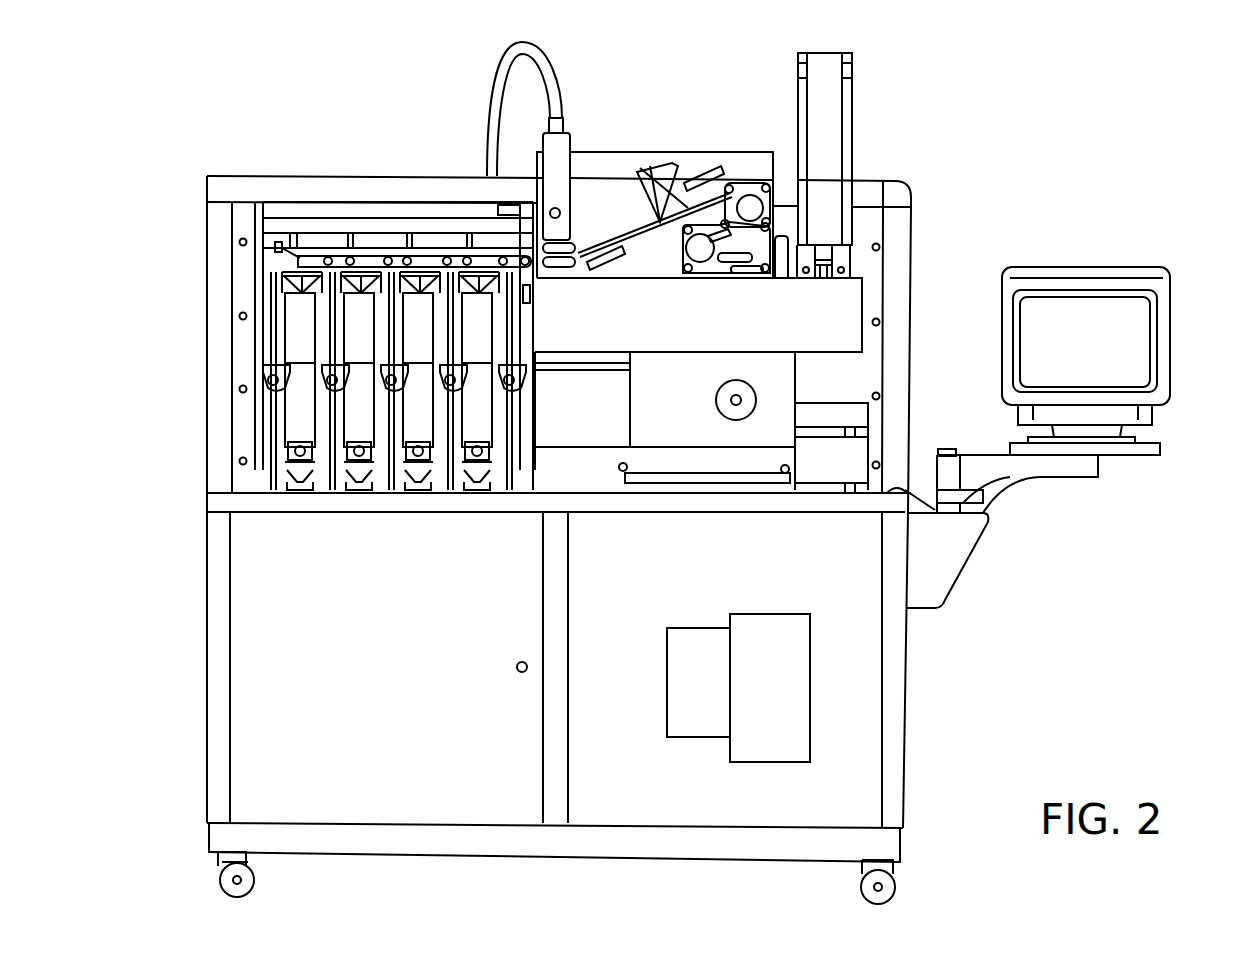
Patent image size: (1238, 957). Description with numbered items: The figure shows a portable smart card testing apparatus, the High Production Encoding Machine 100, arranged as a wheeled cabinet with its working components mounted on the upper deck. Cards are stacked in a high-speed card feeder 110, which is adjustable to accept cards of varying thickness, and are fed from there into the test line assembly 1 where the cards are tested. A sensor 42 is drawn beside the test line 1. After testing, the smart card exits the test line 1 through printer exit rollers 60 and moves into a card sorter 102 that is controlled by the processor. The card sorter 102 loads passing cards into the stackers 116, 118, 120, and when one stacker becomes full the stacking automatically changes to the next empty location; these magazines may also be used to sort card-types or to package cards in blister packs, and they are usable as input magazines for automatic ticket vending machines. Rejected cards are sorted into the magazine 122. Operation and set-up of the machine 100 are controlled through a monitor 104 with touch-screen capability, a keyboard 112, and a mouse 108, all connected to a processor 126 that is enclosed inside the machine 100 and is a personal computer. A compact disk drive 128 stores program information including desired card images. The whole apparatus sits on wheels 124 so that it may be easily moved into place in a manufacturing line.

The High Production Encoding Machine 100 is at (306, 140).
The card sorter 102 is at (410, 213).
The sensor 42 is at (572, 128).
The printer exit rollers 60 is at (562, 268).
The test line assembly 1 is at (637, 152).
The high-speed card feeder 110 is at (852, 92).
The monitor 104 is at (1096, 263).
The mouse 108 is at (945, 449).
The keyboard 112 is at (1130, 456).
The magazine 122 is at (288, 324).
The stacker 120 is at (362, 427).
The stacker 118 is at (423, 422).
The stacker 116 is at (478, 417).
The compact disk drive 128 is at (693, 627).
The processor 126 is at (812, 625).
The wheels 124 is at (865, 892).